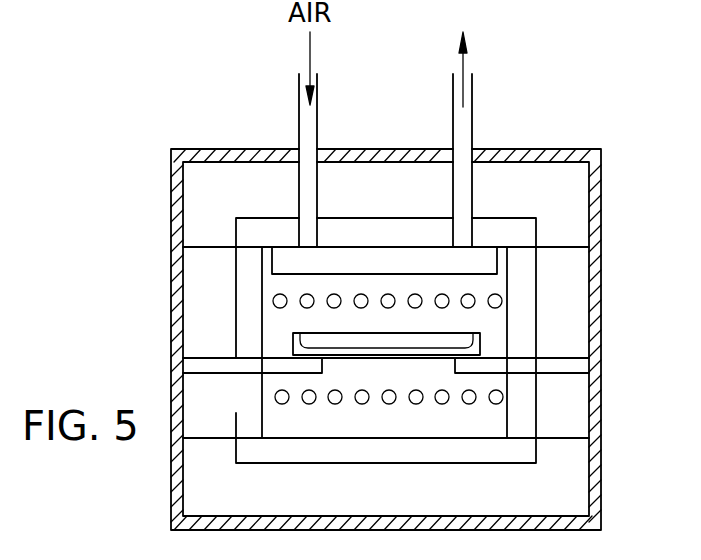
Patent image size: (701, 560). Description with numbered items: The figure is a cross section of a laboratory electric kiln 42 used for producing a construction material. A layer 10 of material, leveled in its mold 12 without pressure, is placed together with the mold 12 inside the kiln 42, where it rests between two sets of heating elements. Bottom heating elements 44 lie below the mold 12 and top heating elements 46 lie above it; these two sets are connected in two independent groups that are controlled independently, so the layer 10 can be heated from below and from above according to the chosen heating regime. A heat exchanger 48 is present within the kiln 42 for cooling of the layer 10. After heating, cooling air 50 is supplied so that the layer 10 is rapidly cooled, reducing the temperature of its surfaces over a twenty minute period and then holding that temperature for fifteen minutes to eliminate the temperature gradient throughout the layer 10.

The layer 10 is at (298, 342).
The mold 12 is at (478, 346).
The laboratory electric kiln 42 is at (142, 314).
The bottom heating elements 44 is at (473, 402).
The top heating elements 46 is at (470, 300).
The heat exchanger 48 is at (470, 256).
The cooling air 50 is at (280, 105).